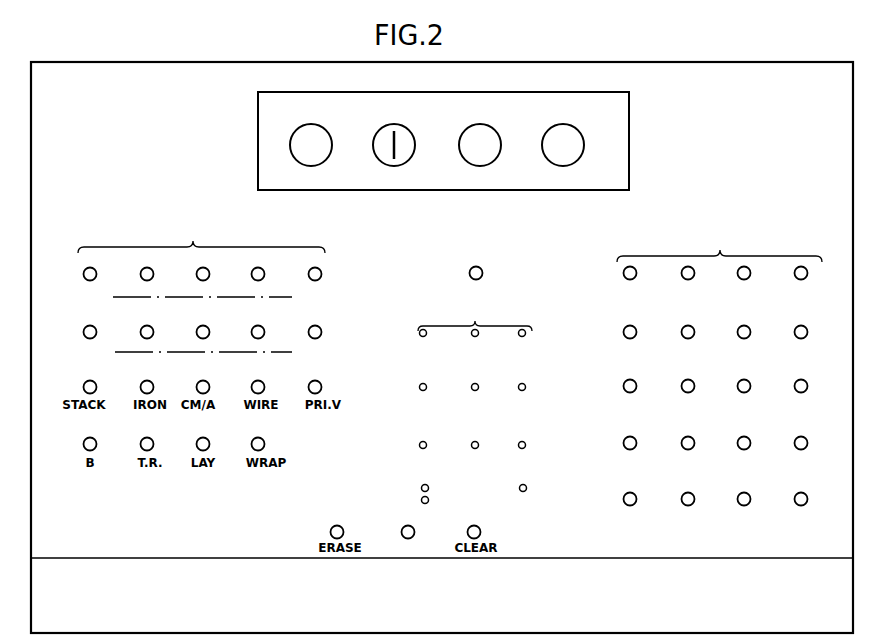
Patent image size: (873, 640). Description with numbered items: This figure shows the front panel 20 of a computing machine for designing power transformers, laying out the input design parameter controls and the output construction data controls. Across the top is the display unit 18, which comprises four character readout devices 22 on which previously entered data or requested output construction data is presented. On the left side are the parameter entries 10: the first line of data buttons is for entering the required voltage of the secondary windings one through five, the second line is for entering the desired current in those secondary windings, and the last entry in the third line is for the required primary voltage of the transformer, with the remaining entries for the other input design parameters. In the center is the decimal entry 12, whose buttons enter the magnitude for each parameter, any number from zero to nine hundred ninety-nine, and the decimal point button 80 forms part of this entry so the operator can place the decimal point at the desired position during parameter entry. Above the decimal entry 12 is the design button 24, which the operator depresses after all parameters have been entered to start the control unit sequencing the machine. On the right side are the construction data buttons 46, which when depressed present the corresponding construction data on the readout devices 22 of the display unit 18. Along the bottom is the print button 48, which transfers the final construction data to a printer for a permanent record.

The front panel 20 is at (121, 70).
The display unit 18 is at (475, 141).
The character readout devices 22 is at (380, 159).
The parameter entries 10 is at (199, 286).
The design button 24 is at (476, 266).
The decimal entry 12 is at (475, 402).
The construction data buttons 46 is at (710, 370).
The print button 48 is at (404, 525).
The decimal point button 80 is at (526, 485).